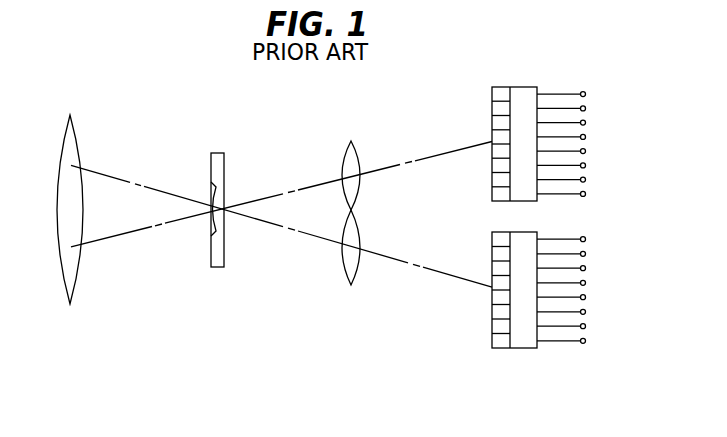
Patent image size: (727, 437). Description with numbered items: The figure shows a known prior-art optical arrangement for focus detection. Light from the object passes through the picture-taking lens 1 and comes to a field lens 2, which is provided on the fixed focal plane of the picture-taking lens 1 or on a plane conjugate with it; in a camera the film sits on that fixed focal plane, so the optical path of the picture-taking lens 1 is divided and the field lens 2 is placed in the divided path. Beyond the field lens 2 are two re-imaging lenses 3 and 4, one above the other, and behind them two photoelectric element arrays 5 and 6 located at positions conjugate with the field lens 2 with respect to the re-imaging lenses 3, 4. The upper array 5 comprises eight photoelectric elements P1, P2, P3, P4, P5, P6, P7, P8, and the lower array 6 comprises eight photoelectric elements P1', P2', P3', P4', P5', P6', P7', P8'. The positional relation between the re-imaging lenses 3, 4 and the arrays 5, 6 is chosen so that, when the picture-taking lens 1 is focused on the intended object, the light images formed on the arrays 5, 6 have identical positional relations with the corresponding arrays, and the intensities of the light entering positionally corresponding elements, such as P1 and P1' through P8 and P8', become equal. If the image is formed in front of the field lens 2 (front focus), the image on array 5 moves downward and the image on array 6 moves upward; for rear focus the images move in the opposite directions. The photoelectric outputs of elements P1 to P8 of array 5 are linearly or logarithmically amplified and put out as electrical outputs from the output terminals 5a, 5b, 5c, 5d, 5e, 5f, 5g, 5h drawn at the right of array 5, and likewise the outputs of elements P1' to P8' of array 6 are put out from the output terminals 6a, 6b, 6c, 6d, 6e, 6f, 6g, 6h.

The picture-taking lens 1 is at (81, 147).
The field lens 2 is at (224, 167).
The re-imaging lens 3 is at (358, 150).
The re-imaging lens 4 is at (342, 257).
The photoelectric element array 5 is at (520, 87).
The output terminal 5a is at (583, 90).
The output terminal 5b is at (586, 108).
The output terminal 5c is at (586, 123).
The output terminal 5d is at (586, 137).
The output terminal 5e is at (586, 151).
The output terminal 5f is at (586, 165).
The output terminal 5g is at (586, 180).
The output terminal 5h is at (586, 194).
The photoelectric element array 6 is at (523, 348).
The output terminal 6a is at (582, 236).
The output terminal 6b is at (586, 254).
The output terminal 6c is at (586, 268).
The output terminal 6d is at (586, 283).
The output terminal 6e is at (586, 297).
The output terminal 6f is at (586, 312).
The output terminal 6g is at (586, 326).
The output terminal 6h is at (586, 341).
The photoelectric element P1 is at (479, 66).
The photoelectric element P2 is at (468, 84).
The photoelectric element P3 is at (468, 104).
The photoelectric element P4 is at (468, 131).
The photoelectric element P5 is at (469, 163).
The photoelectric element P6 is at (459, 178).
The photoelectric element P7 is at (474, 195).
The photoelectric element P8 is at (493, 211).
The photoelectric element P1' is at (468, 232).
The photoelectric element P2' is at (457, 250).
The photoelectric element P3' is at (473, 267).
The photoelectric element P4' is at (459, 292).
The photoelectric element P5' is at (459, 310).
The photoelectric element P6' is at (459, 332).
The photoelectric element P7' is at (459, 352).
The photoelectric element P8' is at (497, 363).